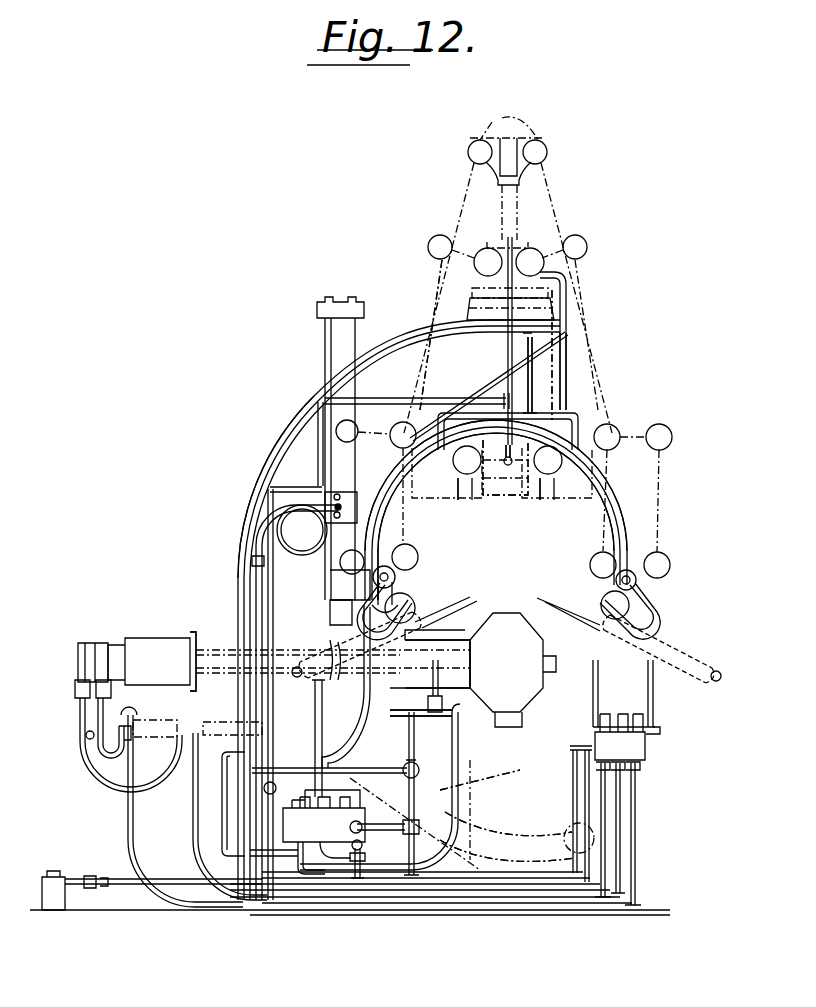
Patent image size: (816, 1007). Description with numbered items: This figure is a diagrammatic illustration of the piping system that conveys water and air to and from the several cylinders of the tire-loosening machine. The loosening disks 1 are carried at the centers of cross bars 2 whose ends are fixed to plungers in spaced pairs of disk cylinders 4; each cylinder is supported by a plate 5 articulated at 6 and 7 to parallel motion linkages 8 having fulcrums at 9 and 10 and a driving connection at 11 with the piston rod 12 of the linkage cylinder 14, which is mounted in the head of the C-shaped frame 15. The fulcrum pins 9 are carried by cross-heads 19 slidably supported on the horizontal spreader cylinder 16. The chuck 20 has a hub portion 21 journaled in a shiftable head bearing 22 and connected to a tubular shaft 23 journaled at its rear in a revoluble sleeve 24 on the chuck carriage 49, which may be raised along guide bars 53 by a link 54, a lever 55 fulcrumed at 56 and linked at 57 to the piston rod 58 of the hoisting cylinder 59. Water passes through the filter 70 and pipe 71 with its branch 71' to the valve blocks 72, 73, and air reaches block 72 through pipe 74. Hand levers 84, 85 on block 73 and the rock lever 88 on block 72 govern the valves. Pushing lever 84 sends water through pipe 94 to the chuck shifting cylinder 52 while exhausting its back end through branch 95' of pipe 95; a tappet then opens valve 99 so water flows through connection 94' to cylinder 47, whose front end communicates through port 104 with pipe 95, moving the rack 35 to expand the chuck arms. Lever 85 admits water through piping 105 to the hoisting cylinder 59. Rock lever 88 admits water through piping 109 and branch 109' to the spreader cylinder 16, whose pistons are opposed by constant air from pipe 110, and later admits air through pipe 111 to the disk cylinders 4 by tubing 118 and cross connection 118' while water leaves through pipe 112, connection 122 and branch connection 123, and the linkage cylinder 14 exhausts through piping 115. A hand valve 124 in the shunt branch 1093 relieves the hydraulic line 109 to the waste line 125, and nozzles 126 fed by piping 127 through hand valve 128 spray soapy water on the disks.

The loosening disk 1 is at (468, 600).
The cross bar 2 is at (420, 598).
The disk cylinder 4 is at (325, 655).
The plate 5 is at (400, 570).
The articulation point 6 is at (422, 547).
The articulation point 7 is at (348, 573).
The parallel motion linkage 8 is at (346, 443).
The fulcrum pin 9 is at (468, 476).
The fulcrum 10 is at (532, 256).
The driving connection 11 is at (488, 135).
The piston rod 12 is at (518, 200).
The linkage cylinder 14 is at (560, 345).
The C-shaped frame 15 is at (455, 343).
The spreader cylinder 16 is at (502, 485).
The cross-head 19 is at (445, 498).
The chuck 20 is at (528, 682).
The hub portion 21 is at (433, 648).
The head bearing 22 is at (400, 700).
The tubular shaft 23 is at (216, 652).
The revoluble sleeve 24 is at (193, 634).
The rack 35 is at (556, 662).
The cylinder 47 is at (160, 638).
The chuck carriage 49 is at (358, 730).
The chuck shifting cylinder 52 is at (165, 718).
The guide bar 53 is at (480, 805).
The link 54 is at (470, 775).
The lever 55 is at (478, 830).
The fulcrum 56 is at (572, 828).
The link connection 57 is at (330, 610).
The piston rod 58 is at (340, 568).
The hoisting cylinder 59 is at (324, 336).
The filter 70 is at (55, 910).
The water supply pipe 71 is at (163, 892).
The branch pipe 71' is at (372, 859).
The valve block 72 is at (324, 816).
The valve block 73 is at (607, 798).
The air pipe 74 is at (308, 880).
The hand lever 84 is at (653, 688).
The hand lever 85 is at (598, 688).
The rock lever 88 is at (314, 696).
The pipe 94 is at (398, 811).
The connection 94' is at (120, 722).
The pipe 95 is at (419, 816).
The branch pipe 95' is at (232, 713).
The valve 99 is at (85, 736).
The port 104 is at (76, 685).
The piping 105 is at (256, 598).
The hydraulic piping 109 is at (272, 670).
The branch 109' is at (583, 375).
The air pipe 110 is at (510, 465).
The air pipe 111 is at (232, 862).
The water pipe 112 is at (460, 752).
The piping 115 is at (566, 378).
The tubing 118 is at (340, 660).
The cross connection 118' is at (528, 492).
The connection 122 is at (400, 640).
The branch connection 123 is at (430, 440).
The hand valve 124 is at (407, 776).
The waste line 125 is at (395, 810).
The nozzle 126 is at (420, 618).
The piping 127 is at (385, 397).
The hand valve 128 is at (276, 786).
The shunt branch 1093 is at (292, 765).